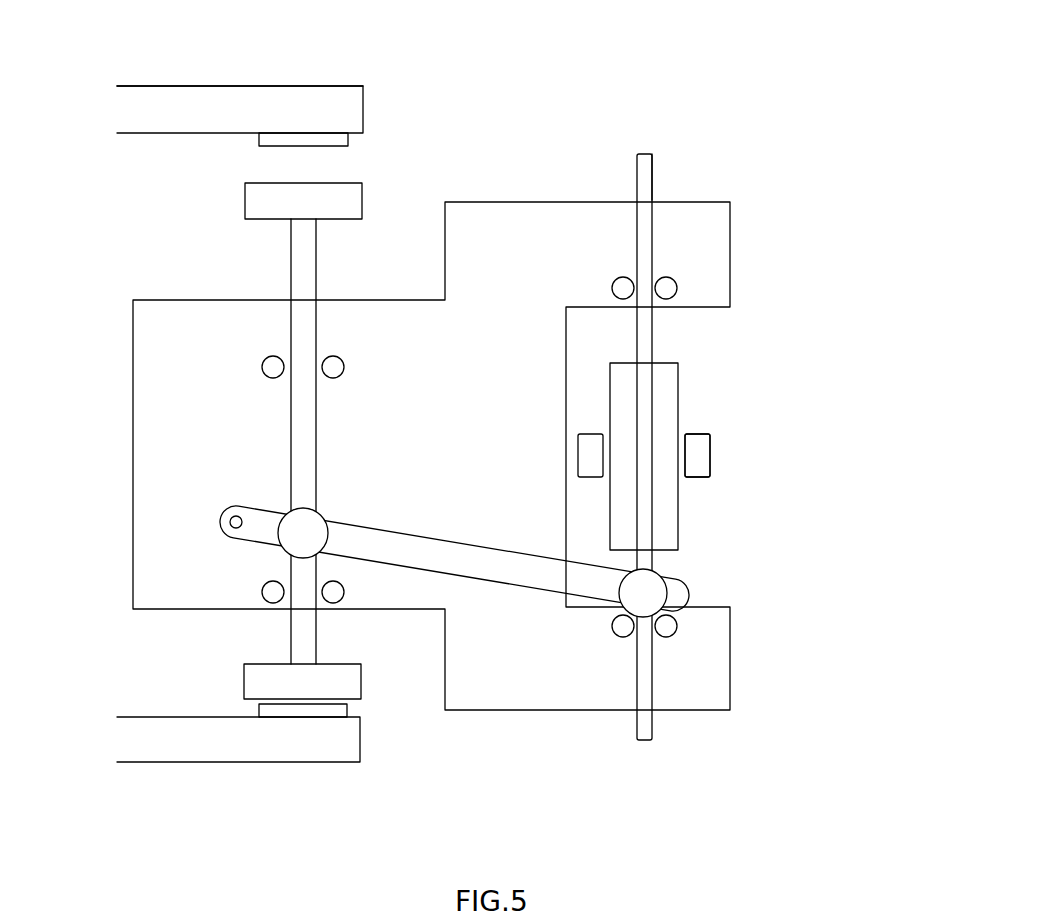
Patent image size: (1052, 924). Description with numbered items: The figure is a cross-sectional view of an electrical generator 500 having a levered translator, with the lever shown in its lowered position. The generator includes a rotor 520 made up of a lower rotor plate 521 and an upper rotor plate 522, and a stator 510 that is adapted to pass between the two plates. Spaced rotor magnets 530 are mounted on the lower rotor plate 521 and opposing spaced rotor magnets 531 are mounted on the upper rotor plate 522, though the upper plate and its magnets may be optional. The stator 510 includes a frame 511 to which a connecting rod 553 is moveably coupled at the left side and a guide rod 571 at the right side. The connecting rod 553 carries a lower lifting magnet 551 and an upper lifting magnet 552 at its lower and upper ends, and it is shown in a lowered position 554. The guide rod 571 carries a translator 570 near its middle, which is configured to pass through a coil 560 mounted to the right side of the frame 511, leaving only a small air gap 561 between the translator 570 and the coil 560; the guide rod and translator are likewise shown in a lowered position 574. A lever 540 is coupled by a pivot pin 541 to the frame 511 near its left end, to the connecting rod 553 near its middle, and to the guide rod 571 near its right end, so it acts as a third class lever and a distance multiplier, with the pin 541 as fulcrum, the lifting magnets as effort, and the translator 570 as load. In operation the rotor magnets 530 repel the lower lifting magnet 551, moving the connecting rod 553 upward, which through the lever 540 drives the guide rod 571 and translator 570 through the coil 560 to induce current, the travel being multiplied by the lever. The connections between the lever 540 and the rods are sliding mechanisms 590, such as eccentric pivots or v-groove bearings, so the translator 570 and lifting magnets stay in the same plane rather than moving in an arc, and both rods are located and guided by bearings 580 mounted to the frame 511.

The electrical generator 500 is at (795, 372).
The stator 510 is at (490, 227).
The frame 511 is at (523, 220).
The rotor 520 is at (177, 102).
The lower rotor plate 521 is at (158, 750).
The upper rotor plate 522 is at (143, 100).
The rotor magnets 530 is at (352, 710).
The opposing rotor magnets 531 is at (352, 139).
The lever 540 is at (480, 560).
The pivot pin 541 is at (223, 522).
The lower lifting magnet 551 is at (253, 682).
The upper lifting magnet 552 is at (252, 207).
The connecting rod 553 is at (300, 273).
The lowered position 554 is at (212, 441).
The coil 560 is at (592, 450).
The air gap 561 is at (680, 470).
The translator 570 is at (655, 533).
The guide rod 571 is at (647, 165).
The lowered position 574 is at (667, 185).
The bearings 580 is at (337, 357).
The sliding mechanisms 590 is at (293, 542).